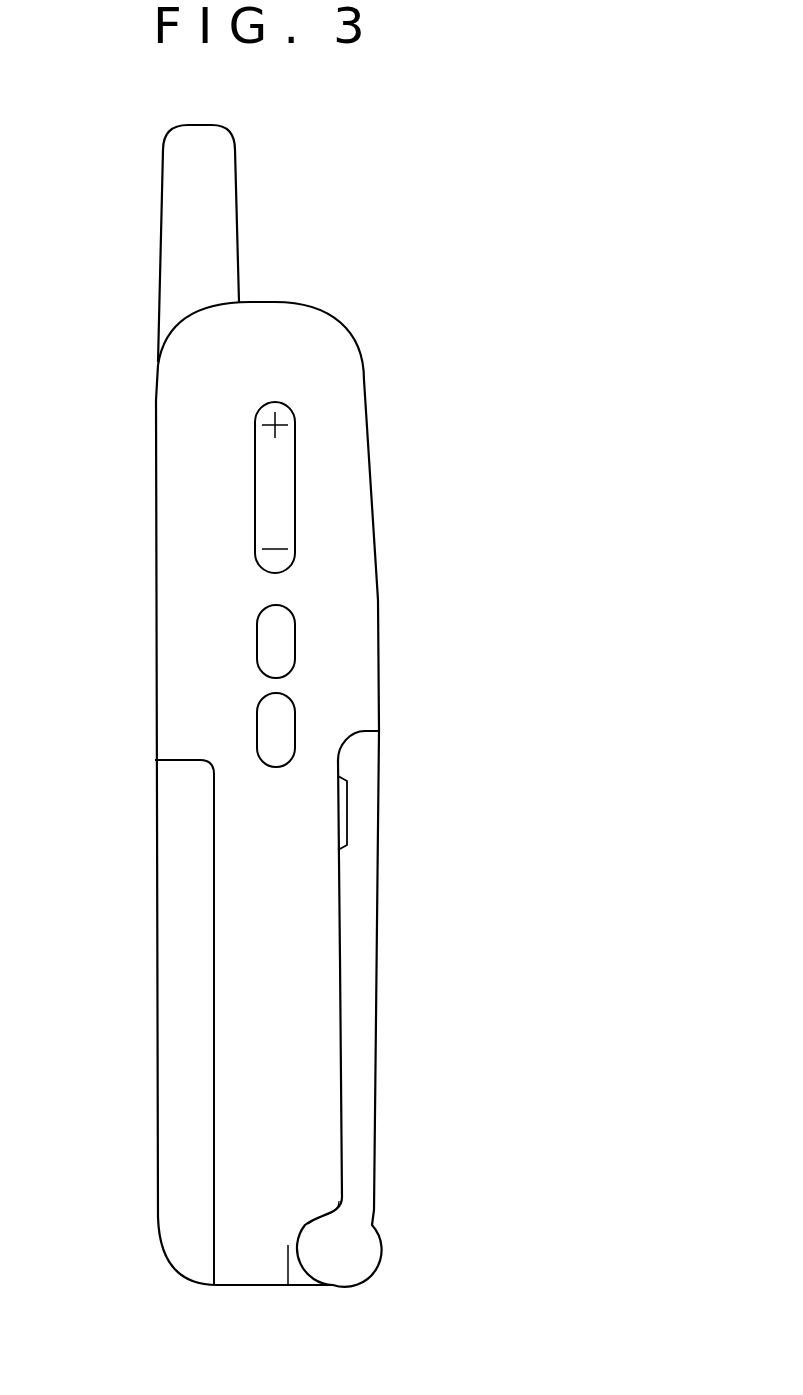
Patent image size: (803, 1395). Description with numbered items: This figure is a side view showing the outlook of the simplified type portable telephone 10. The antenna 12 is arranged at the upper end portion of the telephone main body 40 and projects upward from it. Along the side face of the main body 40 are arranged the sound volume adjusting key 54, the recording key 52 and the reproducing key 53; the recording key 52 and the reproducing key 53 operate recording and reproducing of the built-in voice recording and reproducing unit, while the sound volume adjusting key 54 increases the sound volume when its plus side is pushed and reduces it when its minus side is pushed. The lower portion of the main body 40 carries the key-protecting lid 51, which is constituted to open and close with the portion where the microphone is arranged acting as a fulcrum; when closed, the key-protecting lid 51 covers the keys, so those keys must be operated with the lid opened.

The telephone 10 is at (265, 740).
The antenna 12 is at (212, 168).
The telephone main body 40 is at (342, 378).
The key-protecting lid 51 is at (362, 927).
The recording key 52 is at (257, 645).
The reproducing key 53 is at (257, 735).
The sound volume adjusting key 54 is at (255, 496).